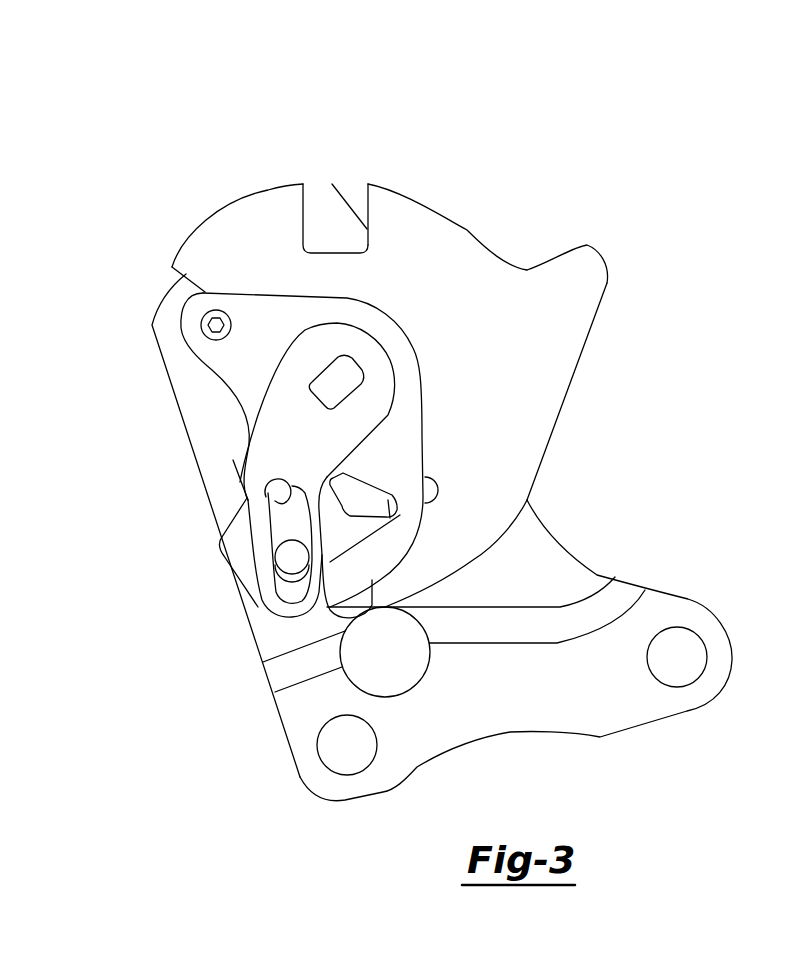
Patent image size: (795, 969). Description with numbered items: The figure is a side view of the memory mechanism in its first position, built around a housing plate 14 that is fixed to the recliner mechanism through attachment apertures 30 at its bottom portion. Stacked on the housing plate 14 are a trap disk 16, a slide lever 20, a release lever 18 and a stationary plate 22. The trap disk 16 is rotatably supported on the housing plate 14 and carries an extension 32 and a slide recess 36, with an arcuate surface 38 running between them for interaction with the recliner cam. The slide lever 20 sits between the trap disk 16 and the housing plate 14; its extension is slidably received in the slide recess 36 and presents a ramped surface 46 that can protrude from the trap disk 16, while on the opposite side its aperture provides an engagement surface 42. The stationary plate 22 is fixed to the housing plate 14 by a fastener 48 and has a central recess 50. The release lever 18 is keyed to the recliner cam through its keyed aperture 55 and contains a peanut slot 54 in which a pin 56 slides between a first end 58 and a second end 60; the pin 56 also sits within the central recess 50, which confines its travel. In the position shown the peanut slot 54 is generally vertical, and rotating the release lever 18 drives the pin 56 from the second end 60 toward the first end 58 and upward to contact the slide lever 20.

The housing plate 14 is at (538, 578).
The trap disk 16 is at (556, 342).
The release lever 18 is at (274, 445).
The slide lever 20 is at (326, 189).
The stationary plate 22 is at (407, 410).
The attachment apertures 30 is at (385, 680).
The extension 32 is at (590, 273).
The slide recess 36 is at (361, 203).
The arcuate surface 38 is at (468, 230).
The engagement surface 42 is at (347, 507).
The ramped surface 46 is at (347, 198).
The fastener 48 is at (229, 327).
The central recess 50 is at (372, 528).
The peanut slot 54 is at (288, 493).
The keyed aperture 55 is at (332, 378).
The pin 56 is at (298, 550).
The first end 58 is at (295, 493).
The second end 60 is at (268, 604).